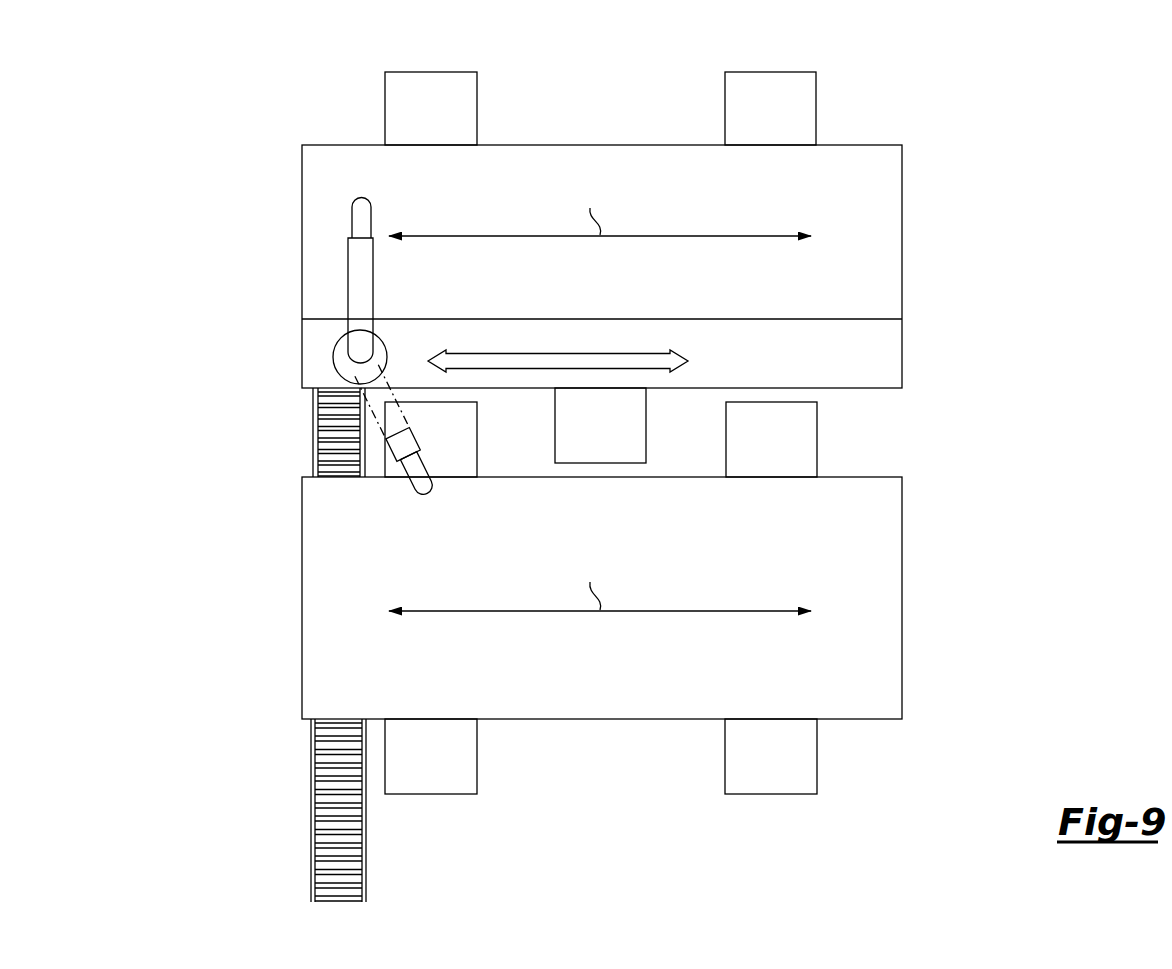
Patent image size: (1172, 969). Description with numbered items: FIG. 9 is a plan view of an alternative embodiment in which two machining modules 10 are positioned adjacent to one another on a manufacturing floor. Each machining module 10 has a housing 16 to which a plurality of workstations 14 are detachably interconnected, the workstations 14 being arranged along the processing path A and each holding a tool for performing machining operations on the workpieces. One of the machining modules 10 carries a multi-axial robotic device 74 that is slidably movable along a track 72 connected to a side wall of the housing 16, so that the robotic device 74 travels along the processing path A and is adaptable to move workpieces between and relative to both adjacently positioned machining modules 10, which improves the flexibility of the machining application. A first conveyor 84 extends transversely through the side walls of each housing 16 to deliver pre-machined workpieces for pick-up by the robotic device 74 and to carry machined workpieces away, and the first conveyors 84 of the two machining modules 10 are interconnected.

The machining module 10 is at (238, 225).
The workstation 14 is at (467, 97).
The housing 16 is at (636, 172).
The track 72 is at (822, 331).
The multi-axial robotic device 74 is at (357, 274).
The first conveyor 84 is at (309, 432).